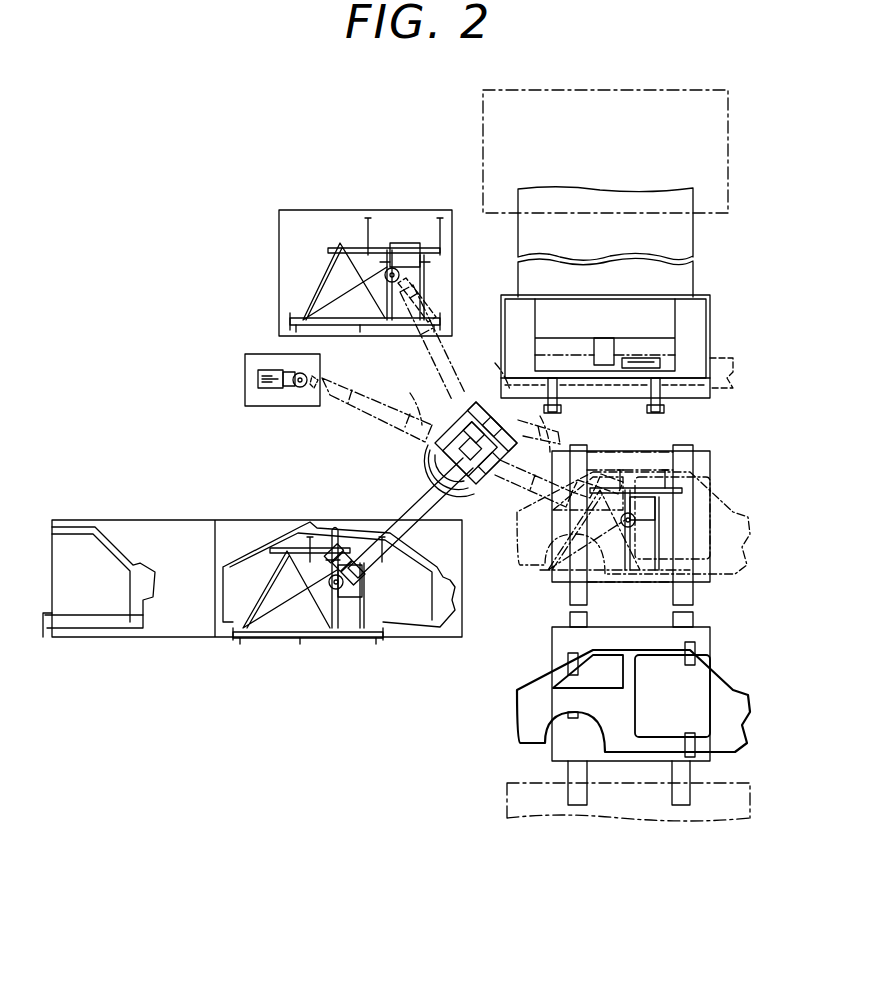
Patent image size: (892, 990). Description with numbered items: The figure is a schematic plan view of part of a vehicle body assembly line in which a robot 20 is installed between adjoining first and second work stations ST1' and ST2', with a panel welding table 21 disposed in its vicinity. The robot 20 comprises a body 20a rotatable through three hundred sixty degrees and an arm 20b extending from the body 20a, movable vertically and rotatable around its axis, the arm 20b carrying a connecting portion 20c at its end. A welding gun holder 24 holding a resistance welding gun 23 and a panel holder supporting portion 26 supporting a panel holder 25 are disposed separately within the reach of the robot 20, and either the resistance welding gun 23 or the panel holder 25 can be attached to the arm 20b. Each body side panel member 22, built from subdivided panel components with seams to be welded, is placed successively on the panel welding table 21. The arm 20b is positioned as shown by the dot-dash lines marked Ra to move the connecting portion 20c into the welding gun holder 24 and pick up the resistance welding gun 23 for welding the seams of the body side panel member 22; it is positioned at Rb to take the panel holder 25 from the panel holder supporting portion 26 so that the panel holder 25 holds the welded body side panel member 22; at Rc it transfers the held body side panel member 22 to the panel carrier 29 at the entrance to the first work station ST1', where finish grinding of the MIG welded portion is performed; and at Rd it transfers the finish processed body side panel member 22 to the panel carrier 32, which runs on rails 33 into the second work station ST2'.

The robot 20 is at (480, 482).
The body 20a is at (432, 452).
The arm 20b is at (416, 398).
The connecting portion 20c is at (427, 273).
The panel welding table 21 is at (231, 528).
The body side panel member 22 is at (722, 368).
The resistance welding gun 23 is at (262, 372).
The welding gun holder 24 is at (245, 393).
The panel holder 25 is at (405, 242).
The panel holder supporting portion 26 is at (300, 220).
The panel carrier 29 is at (715, 313).
The panel carrier 32 is at (712, 462).
The rails 33 is at (678, 590).
The arm position for welding gun holder Ra is at (365, 445).
The arm position for panel holder supporting portion Rb is at (428, 369).
The arm position for first panel carrier Rc is at (510, 410).
The arm position for second panel carrier Rd is at (521, 508).
The first work station ST1' is at (638, 151).
The second work station ST2' is at (658, 788).